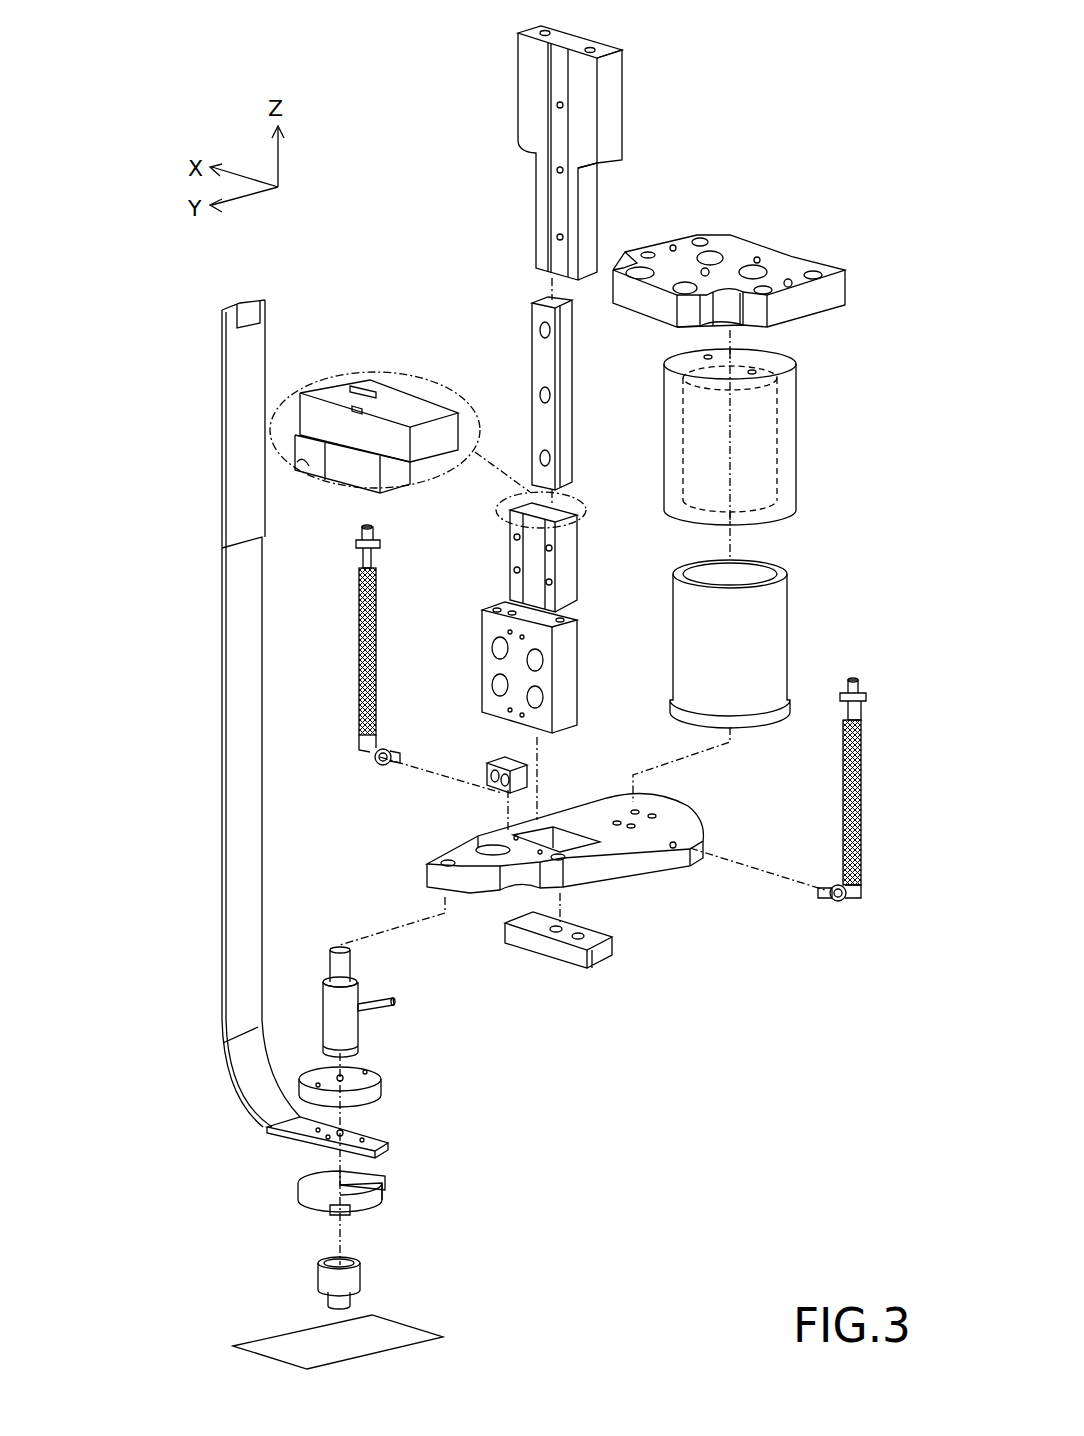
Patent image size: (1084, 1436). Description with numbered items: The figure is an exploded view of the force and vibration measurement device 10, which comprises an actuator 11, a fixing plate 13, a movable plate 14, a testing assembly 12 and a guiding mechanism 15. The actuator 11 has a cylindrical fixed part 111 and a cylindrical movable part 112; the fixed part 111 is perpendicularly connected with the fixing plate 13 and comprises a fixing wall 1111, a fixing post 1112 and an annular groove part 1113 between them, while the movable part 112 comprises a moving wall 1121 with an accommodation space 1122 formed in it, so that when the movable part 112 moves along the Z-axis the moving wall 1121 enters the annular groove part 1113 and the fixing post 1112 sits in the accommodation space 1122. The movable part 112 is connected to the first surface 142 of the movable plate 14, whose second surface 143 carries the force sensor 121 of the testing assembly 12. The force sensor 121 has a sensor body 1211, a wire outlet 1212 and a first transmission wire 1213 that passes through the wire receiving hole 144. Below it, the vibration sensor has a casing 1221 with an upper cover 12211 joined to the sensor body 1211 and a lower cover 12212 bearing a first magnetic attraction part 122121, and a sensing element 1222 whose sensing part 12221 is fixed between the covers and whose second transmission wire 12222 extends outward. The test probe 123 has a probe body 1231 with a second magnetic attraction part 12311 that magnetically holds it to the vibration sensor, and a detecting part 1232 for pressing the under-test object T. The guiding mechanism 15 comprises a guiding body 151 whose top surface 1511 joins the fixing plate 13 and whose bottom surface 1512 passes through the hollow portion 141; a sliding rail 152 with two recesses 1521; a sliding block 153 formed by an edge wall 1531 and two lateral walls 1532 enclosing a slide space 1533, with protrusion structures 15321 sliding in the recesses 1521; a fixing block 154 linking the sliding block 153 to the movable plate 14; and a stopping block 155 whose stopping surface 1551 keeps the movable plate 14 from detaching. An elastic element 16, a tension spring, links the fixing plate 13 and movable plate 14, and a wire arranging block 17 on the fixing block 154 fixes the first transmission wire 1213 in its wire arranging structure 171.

The force and vibration measurement device 10 is at (831, 94).
The actuator 11 is at (626, 983).
The fixed part 111 is at (807, 437).
The fixing wall 1111 is at (800, 392).
The fixing post 1112 is at (767, 417).
The annular groove part 1113 is at (787, 490).
The movable part 112 is at (811, 627).
The moving wall 1121 is at (787, 572).
The accommodation space 1122 is at (763, 577).
The testing assembly 12 is at (626, 1305).
The force sensor 121 is at (509, 1065).
The sensor body 1211 is at (337, 1008).
The wire outlet 1212 is at (360, 1013).
The first transmission wire 1213 is at (380, 1000).
The casing 1221 is at (475, 1174).
The upper cover 12211 is at (382, 1082).
The lower cover 12212 is at (331, 1168).
The first magnetic attraction part 122121 is at (320, 1225).
The sensing element 1222 is at (220, 729).
The sensing part 12221 is at (307, 1147).
The second transmission wire 12222 is at (257, 1083).
The test probe 123 is at (301, 1266).
The probe body 1231 is at (343, 1268).
The second magnetic attraction part 12311 is at (340, 1268).
The detecting part 1232 is at (333, 1307).
The fixing plate 13 is at (790, 266).
The movable plate 14 is at (607, 927).
The hollow portion 141 is at (578, 840).
The first surface 142 is at (670, 818).
The second surface 143 is at (673, 858).
The wire receiving hole 144 is at (498, 850).
The guiding mechanism 15 is at (881, 935).
The guiding body 151 is at (528, 88).
The top surface 1511 is at (586, 44).
The bottom surface 1512 is at (552, 277).
The sliding rail 152 is at (542, 352).
The recesses 1521 is at (560, 377).
The sliding block 153 is at (532, 573).
The edge wall 1531 is at (402, 413).
The lateral walls 1532 is at (428, 405).
The protrusion structures 15321 is at (413, 407).
The slide space 1533 is at (390, 398).
The fixing block 154 is at (488, 663).
The stopping block 155 is at (588, 952).
The stopping surface 1551 is at (597, 930).
The elastic element 16 is at (862, 778).
The wire arranging block 17 is at (490, 767).
The wire arranging structure 171 is at (517, 760).
The under-test object T is at (382, 1333).